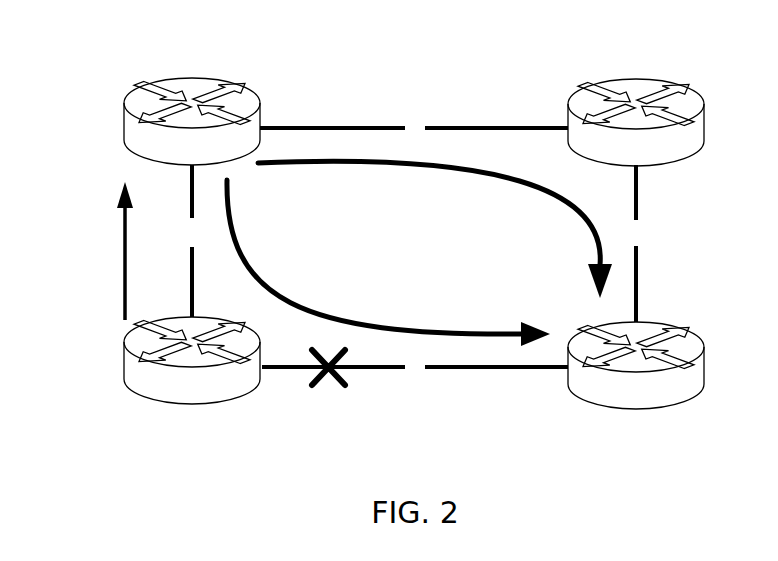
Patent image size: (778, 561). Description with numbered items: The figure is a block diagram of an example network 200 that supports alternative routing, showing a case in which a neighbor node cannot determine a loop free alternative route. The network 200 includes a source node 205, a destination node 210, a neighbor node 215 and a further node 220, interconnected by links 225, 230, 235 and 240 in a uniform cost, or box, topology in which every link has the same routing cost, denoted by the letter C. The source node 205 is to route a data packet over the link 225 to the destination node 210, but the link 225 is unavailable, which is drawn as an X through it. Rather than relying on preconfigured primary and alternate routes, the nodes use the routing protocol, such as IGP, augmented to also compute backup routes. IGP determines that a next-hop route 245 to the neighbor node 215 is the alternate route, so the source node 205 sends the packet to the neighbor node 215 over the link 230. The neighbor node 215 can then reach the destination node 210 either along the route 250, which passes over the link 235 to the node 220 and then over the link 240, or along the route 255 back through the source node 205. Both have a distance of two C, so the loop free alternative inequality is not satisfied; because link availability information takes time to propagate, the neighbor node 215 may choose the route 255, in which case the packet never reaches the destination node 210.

The network 200 is at (409, 54).
The source node 205 is at (173, 395).
The destination node 210 is at (617, 399).
The neighbor node 215 is at (173, 155).
The node 220 is at (617, 156).
The link 225 is at (450, 367).
The link 230 is at (190, 195).
The link 235 is at (450, 128).
The link 240 is at (636, 280).
The next-hop route 245 is at (122, 263).
The route 250 is at (367, 158).
The route 255 is at (428, 332).